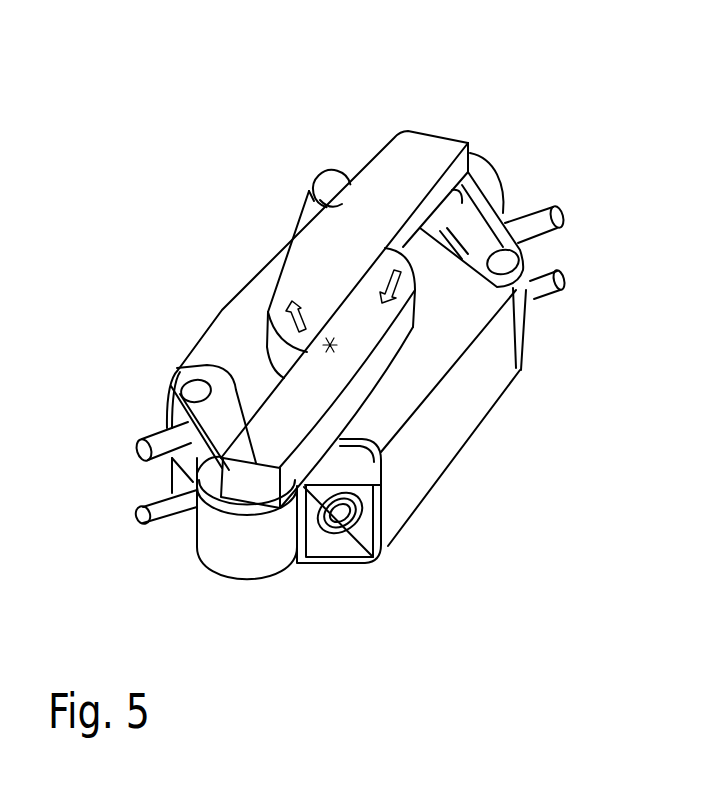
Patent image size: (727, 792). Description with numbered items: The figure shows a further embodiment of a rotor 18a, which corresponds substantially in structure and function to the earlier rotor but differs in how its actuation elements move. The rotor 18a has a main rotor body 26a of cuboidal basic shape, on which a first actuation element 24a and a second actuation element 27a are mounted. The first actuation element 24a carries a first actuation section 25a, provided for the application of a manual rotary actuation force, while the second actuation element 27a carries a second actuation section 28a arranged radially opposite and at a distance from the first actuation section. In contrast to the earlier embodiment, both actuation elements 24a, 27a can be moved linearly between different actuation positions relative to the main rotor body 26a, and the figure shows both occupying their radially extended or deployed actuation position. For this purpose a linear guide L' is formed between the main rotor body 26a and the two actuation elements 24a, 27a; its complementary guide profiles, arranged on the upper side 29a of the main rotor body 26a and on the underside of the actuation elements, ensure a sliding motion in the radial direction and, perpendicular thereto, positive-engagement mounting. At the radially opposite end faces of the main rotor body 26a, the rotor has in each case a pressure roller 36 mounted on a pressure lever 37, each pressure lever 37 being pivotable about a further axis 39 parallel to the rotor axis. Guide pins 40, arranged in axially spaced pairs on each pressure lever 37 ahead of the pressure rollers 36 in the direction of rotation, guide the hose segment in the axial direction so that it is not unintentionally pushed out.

The rotor 18a is at (252, 120).
The first actuation element 24a is at (372, 422).
The first actuation section 25a is at (286, 486).
The main rotor body 26a is at (231, 298).
The second actuation element 27a is at (303, 238).
The second actuation section 28a is at (387, 143).
The upper side of the main rotor body 29a is at (449, 332).
The pressure roller 36 is at (478, 176).
The pressure lever 37 is at (333, 178).
The further axis 39 is at (510, 260).
The guide pins 40 is at (557, 210).
The linear guide L' is at (455, 375).